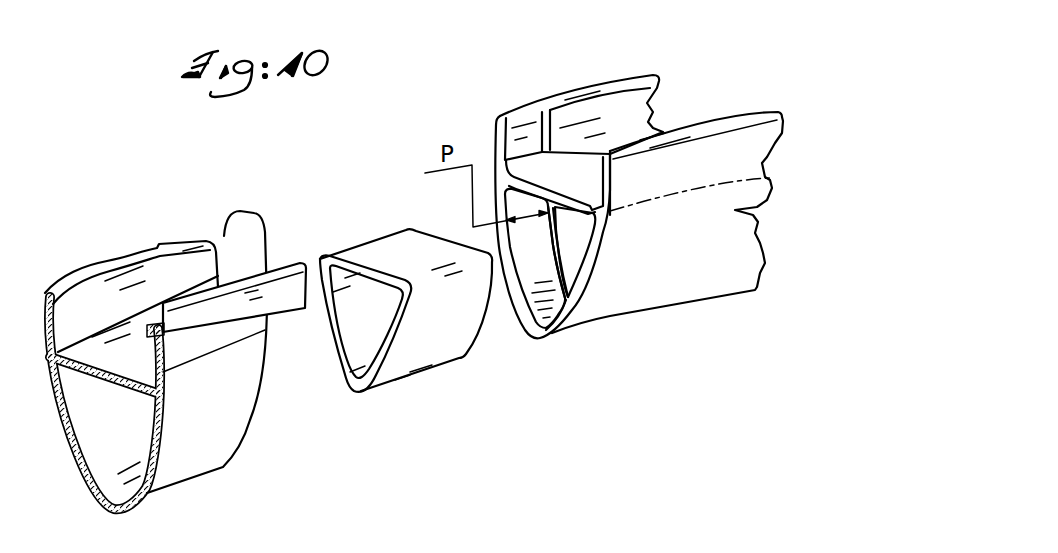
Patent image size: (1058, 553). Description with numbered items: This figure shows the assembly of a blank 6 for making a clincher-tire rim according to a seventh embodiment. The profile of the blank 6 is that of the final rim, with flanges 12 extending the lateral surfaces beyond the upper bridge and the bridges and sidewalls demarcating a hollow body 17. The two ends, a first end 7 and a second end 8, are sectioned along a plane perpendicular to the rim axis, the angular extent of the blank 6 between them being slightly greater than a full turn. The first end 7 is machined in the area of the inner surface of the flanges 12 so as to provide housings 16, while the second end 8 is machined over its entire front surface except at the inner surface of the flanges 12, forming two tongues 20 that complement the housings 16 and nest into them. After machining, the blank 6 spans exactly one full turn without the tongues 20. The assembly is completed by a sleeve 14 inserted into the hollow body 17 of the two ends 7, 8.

The blank 6 is at (703, 280).
The first end 7 is at (573, 305).
The second end 8 is at (255, 412).
The flanges 12 is at (600, 235).
The sleeve 14 is at (418, 352).
The housings 16 is at (528, 122).
The hollow body 17 is at (565, 261).
The tongues 20 is at (212, 240).